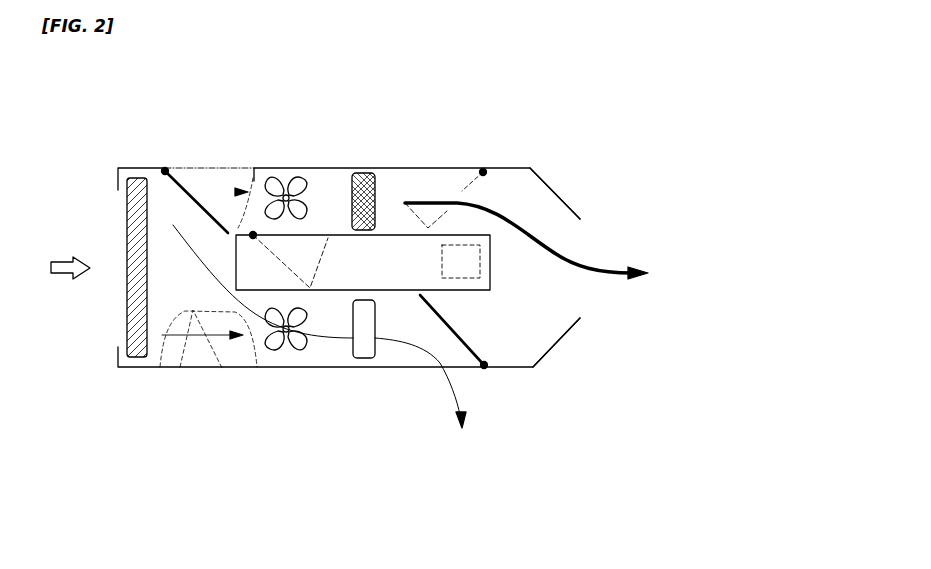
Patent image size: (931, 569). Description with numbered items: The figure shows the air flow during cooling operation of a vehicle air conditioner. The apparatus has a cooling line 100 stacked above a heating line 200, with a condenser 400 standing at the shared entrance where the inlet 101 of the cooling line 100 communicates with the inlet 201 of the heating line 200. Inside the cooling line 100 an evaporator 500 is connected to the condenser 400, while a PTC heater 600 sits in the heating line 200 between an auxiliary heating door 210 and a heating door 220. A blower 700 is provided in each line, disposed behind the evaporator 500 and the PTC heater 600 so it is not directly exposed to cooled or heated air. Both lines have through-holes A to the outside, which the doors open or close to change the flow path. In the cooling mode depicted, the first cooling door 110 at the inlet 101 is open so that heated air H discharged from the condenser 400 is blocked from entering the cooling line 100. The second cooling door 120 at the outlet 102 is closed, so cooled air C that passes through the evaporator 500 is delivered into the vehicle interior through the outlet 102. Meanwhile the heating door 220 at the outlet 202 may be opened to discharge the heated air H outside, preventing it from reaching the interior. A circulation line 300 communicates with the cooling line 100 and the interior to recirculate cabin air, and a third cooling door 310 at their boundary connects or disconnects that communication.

The cooling line 100 is at (319, 204).
The inlet 101 is at (190, 208).
The outlet 102 is at (498, 200).
The first cooling door 110 is at (212, 182).
The second cooling door 120 is at (465, 190).
The heating line 200 is at (333, 323).
The inlet 201 is at (257, 367).
The outlet 202 is at (500, 325).
The auxiliary heating door 210 is at (186, 357).
The heating door 220 is at (418, 302).
The circulation line 300 is at (398, 262).
The third cooling door 310 is at (363, 261).
The condenser 400 is at (127, 320).
The evaporator 500 is at (362, 172).
The PTC heater 600 is at (362, 350).
The blower 700 is at (272, 158).
The through-hole A is at (224, 166).
The heated air H is at (176, 243).
The cooled air C is at (594, 268).